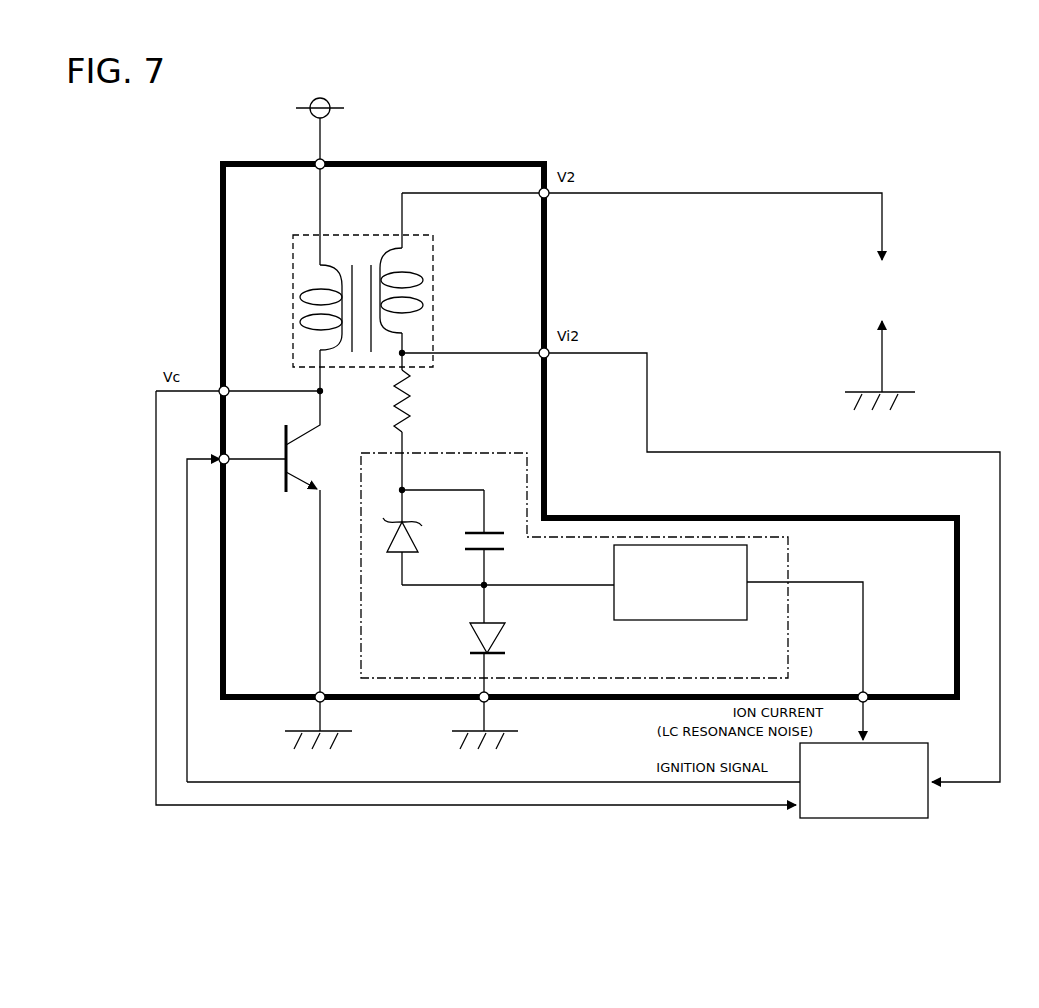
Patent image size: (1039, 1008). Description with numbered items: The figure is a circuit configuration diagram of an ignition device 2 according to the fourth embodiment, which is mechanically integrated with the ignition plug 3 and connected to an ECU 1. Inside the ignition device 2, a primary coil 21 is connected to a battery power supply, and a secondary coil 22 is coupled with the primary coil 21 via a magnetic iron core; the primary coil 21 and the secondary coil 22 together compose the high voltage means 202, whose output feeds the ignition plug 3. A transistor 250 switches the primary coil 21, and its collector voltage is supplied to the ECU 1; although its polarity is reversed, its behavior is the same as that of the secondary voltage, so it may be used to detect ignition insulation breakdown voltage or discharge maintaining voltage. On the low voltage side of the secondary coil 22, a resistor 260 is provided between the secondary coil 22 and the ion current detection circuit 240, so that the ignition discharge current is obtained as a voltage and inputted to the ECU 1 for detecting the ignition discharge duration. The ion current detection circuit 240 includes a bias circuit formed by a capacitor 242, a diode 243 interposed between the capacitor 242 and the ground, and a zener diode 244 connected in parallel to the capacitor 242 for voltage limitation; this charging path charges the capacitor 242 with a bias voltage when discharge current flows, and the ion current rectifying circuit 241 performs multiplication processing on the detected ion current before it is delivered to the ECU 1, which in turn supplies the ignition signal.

The ECU 1 is at (926, 742).
The ignition device 2 is at (468, 162).
The ignition plug 3 is at (890, 212).
The primary coil 21 is at (302, 328).
The secondary coil 22 is at (430, 292).
The high voltage means 202 is at (376, 277).
The ion current detection circuit 240 is at (574, 575).
The ion current rectifying circuit 241 is at (682, 621).
The capacitor 242 is at (462, 538).
The diode 243 is at (512, 622).
The zener diode 244 is at (398, 550).
The transistor 250 is at (291, 498).
The resistor 260 is at (418, 390).